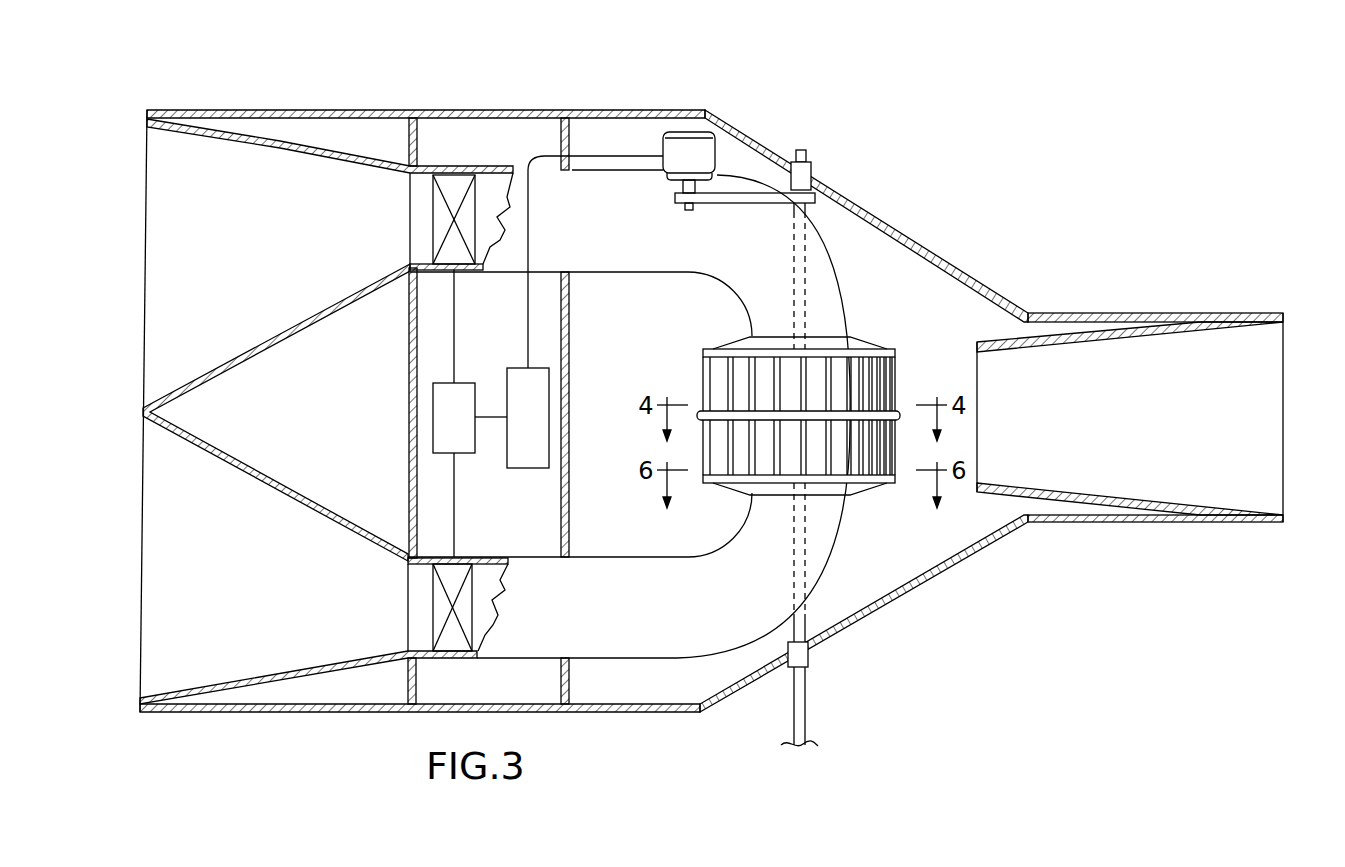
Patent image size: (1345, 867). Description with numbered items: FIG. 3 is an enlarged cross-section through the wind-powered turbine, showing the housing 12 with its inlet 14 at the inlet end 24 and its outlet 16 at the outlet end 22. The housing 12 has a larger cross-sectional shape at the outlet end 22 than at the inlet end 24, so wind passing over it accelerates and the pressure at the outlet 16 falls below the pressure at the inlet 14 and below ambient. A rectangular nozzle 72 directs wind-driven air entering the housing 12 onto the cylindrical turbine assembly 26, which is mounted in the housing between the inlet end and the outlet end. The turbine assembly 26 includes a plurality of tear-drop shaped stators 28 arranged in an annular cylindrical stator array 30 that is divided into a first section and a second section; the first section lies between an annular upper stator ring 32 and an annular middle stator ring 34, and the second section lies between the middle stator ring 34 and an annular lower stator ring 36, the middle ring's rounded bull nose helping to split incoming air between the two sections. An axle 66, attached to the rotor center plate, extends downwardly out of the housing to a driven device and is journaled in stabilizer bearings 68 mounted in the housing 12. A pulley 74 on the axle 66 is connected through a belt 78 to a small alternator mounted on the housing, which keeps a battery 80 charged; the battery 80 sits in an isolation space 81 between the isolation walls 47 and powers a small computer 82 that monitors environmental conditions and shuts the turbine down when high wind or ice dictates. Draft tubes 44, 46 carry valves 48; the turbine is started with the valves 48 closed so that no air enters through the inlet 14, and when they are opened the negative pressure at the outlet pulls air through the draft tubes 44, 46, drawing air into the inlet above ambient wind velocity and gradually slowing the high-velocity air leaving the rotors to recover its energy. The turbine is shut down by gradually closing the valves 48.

The housing 12 is at (633, 110).
The inlet 14 is at (1262, 410).
The outlet 16 is at (162, 243).
The outlet end 22 is at (300, 110).
The inlet end 24 is at (1159, 312).
The turbine assembly 26 is at (668, 186).
The stator 28 is at (762, 376).
The stator array 30 is at (796, 421).
The upper stator ring 32 is at (897, 353).
The middle stator ring 34 is at (902, 413).
The lower stator ring 36 is at (895, 484).
The draft tube 44 is at (636, 253).
The draft tube 46 is at (623, 578).
The isolation wall 47 is at (410, 146).
The valve 48 is at (433, 217).
The axle 66 is at (802, 150).
The stabilizer bearing 68 is at (812, 176).
The nozzle 72 is at (1056, 327).
The pulley 74 is at (822, 204).
The belt 78 is at (745, 204).
The battery 80 is at (516, 430).
The isolation space 81 is at (528, 678).
The computer 82 is at (442, 430).